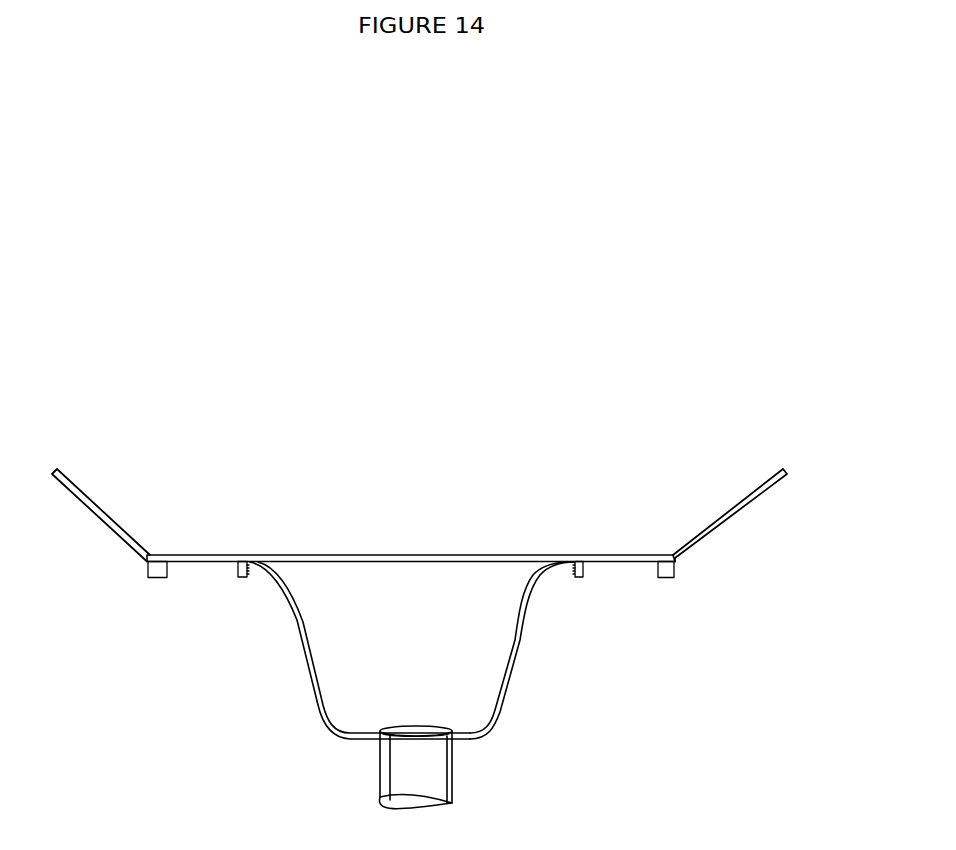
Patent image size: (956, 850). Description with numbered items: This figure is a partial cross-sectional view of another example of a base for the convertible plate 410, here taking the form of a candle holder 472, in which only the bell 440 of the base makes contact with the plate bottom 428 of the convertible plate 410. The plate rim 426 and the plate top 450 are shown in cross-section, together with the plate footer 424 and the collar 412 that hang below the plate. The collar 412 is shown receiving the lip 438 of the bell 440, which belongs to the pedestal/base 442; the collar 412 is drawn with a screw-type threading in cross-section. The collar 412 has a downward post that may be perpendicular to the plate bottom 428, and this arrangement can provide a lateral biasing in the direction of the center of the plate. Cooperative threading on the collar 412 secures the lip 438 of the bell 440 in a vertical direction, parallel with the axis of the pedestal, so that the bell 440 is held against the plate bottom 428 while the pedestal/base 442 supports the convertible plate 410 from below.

The convertible plate 410 is at (364, 432).
The collar 412 is at (238, 578).
The plate footer 424 is at (665, 578).
The plate rim 426 is at (710, 537).
The plate bottom 428 is at (213, 562).
The lip 438 is at (540, 578).
The bell 440 is at (508, 711).
The pedestal/base 442 is at (430, 758).
The plate top 450 is at (617, 555).
The candle holder 472 is at (403, 727).